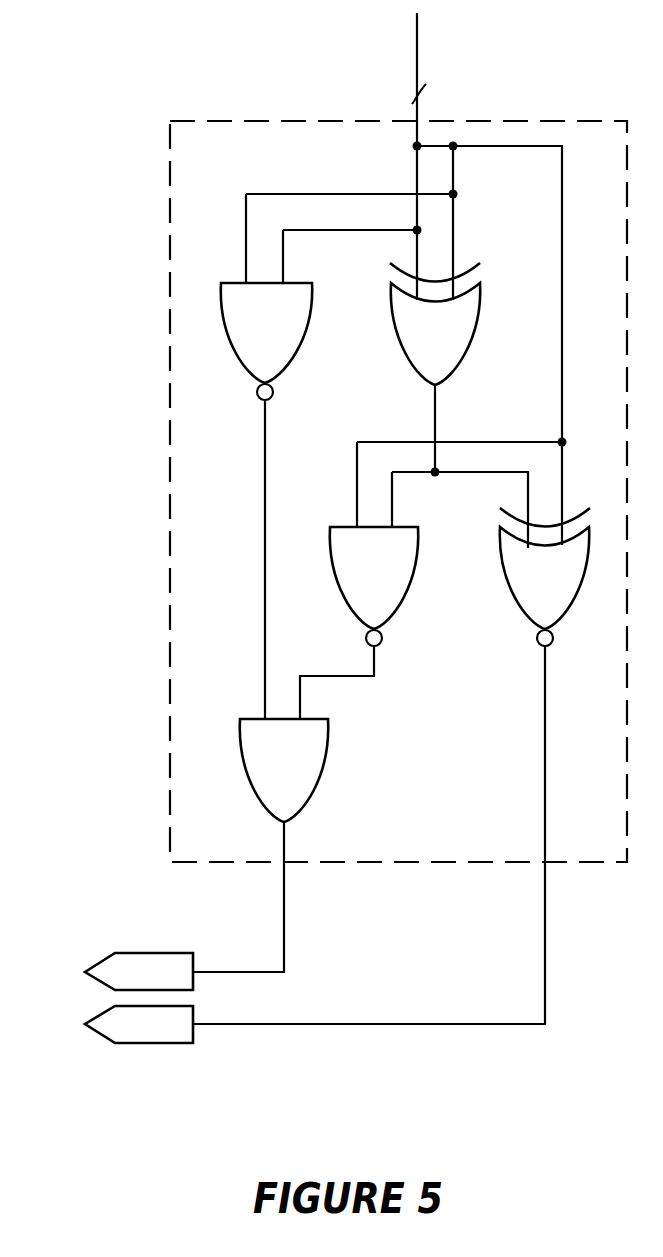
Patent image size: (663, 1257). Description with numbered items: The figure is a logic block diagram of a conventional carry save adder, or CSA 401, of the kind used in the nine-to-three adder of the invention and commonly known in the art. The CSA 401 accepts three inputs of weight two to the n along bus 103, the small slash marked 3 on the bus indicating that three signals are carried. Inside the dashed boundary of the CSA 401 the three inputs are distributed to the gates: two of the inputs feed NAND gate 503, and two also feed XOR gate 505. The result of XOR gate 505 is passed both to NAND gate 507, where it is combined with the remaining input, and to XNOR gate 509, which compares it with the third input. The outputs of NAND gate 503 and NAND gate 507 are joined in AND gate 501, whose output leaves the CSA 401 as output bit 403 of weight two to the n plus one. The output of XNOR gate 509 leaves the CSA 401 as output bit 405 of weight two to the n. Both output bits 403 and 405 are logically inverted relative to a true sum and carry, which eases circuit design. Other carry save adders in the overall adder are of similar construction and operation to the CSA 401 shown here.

The bus 103 is at (418, 57).
The inputs 3 is at (408, 84).
The CSA 401 is at (62, 849).
The output bit 403 is at (250, 971).
The output bit 405 is at (330, 1026).
The AND gate 501 is at (262, 780).
The NAND gate 503 is at (243, 343).
The XOR gate 505 is at (413, 345).
The NAND gate 507 is at (352, 588).
The XNOR gate 509 is at (523, 588).